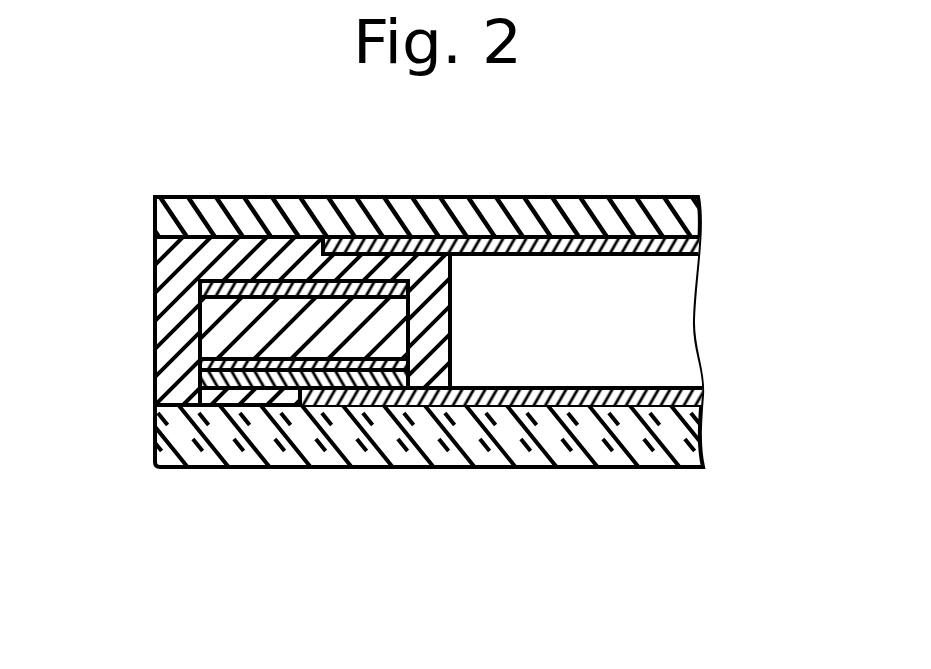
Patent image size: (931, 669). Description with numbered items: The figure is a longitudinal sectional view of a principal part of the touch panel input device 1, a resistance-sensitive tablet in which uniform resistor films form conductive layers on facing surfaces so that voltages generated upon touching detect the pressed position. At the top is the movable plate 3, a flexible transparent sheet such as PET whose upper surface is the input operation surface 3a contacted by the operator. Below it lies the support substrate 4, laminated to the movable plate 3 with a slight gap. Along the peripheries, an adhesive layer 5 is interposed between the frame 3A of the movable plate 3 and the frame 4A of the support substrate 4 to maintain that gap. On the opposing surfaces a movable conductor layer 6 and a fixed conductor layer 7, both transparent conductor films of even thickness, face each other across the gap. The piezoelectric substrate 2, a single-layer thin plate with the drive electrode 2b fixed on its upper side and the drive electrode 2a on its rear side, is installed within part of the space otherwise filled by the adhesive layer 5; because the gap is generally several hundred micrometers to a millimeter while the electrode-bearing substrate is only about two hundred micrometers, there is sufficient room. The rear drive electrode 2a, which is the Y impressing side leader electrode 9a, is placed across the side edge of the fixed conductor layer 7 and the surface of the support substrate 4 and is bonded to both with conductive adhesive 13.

The touch panel input device 1 is at (738, 198).
The piezoelectric substrate 2 is at (247, 330).
The drive electrode 2a is at (207, 373).
The Y impressing side leader electrode 9a is at (304, 364).
The drive electrode 2b is at (232, 281).
The movable plate 3 is at (340, 215).
The frame 3A is at (432, 217).
The input operation surface 3a is at (616, 188).
The support substrate 4 is at (652, 446).
The frame 4A is at (338, 440).
The adhesive layer 5 is at (176, 262).
The movable conductor layer 6 is at (678, 258).
The fixed conductor layer 7 is at (643, 386).
The conductive adhesive 13 is at (262, 405).